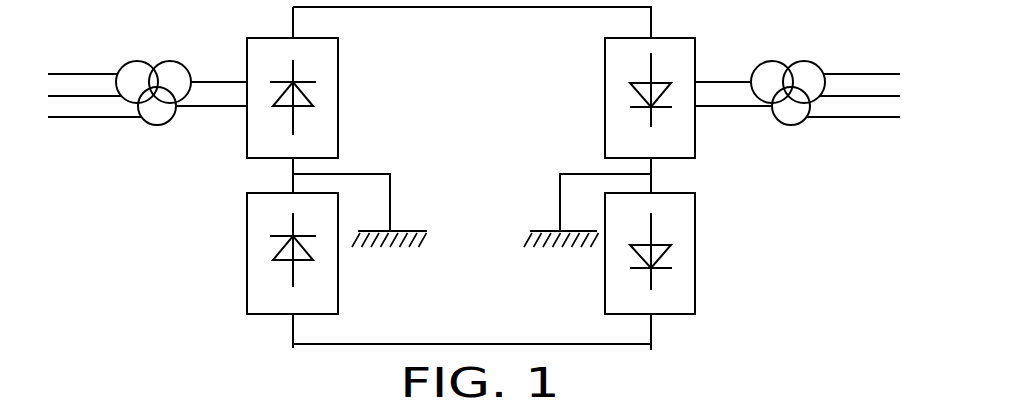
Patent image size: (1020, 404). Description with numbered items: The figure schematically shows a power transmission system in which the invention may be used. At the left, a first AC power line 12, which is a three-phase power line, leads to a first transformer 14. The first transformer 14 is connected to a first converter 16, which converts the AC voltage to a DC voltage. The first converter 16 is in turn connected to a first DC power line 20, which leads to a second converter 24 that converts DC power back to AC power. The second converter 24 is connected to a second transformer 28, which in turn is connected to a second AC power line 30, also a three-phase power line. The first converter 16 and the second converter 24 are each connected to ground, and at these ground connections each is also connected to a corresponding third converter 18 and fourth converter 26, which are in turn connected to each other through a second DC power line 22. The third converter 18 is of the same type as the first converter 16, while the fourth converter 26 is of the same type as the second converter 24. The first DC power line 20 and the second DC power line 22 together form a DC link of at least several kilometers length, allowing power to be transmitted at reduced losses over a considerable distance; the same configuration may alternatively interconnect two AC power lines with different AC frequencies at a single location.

The first AC power line 12 is at (94, 71).
The first transformer 14 is at (164, 65).
The first converter 16 is at (339, 110).
The third converter 18 is at (247, 252).
The first DC power line 20 is at (520, 7).
The second DC power line 22 is at (415, 344).
The second converter 24 is at (607, 101).
The fourth converter 26 is at (695, 272).
The second transformer 28 is at (782, 68).
The second AC power line 30 is at (873, 118).